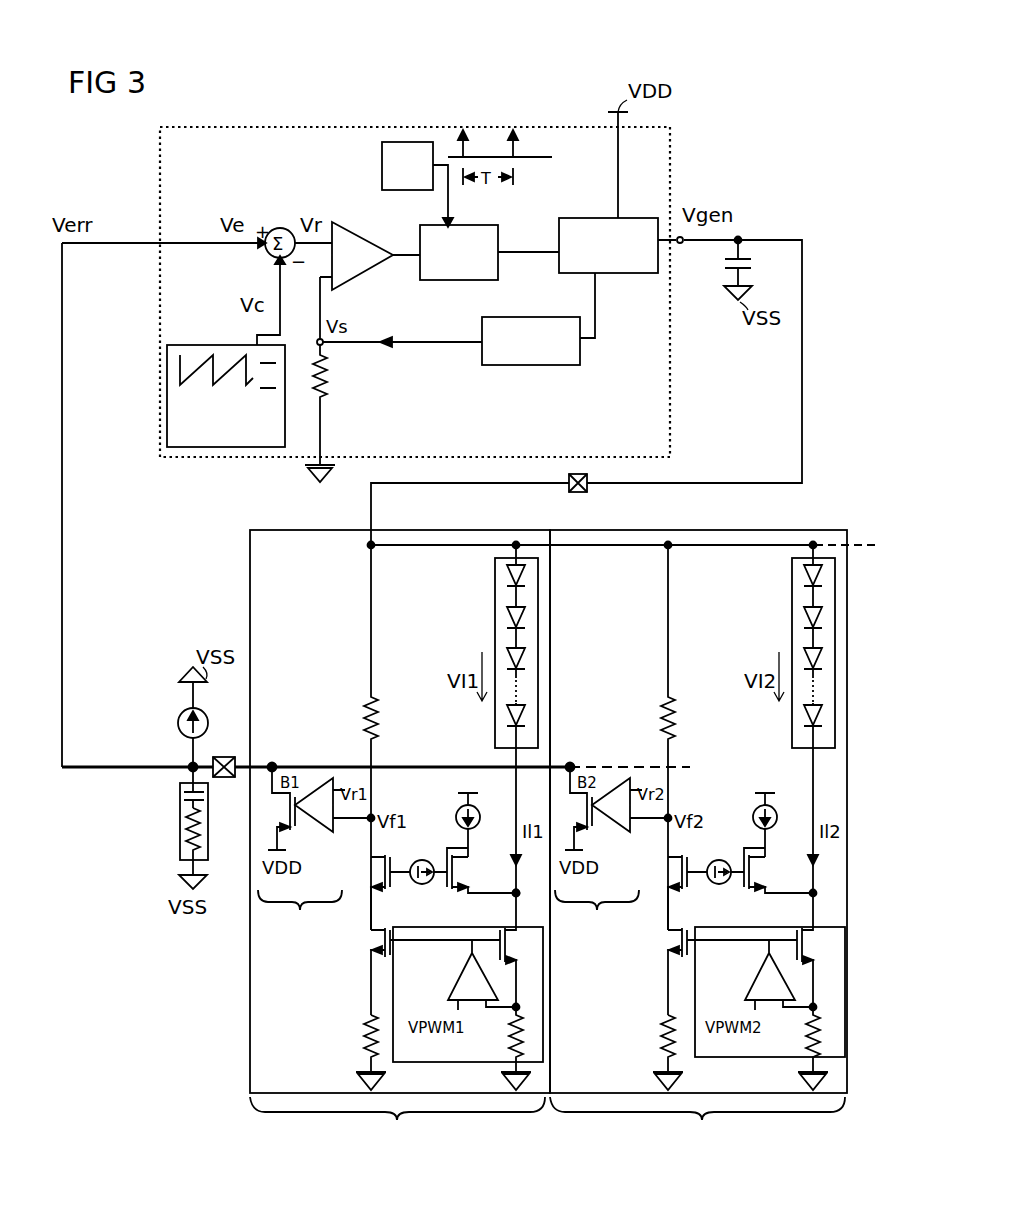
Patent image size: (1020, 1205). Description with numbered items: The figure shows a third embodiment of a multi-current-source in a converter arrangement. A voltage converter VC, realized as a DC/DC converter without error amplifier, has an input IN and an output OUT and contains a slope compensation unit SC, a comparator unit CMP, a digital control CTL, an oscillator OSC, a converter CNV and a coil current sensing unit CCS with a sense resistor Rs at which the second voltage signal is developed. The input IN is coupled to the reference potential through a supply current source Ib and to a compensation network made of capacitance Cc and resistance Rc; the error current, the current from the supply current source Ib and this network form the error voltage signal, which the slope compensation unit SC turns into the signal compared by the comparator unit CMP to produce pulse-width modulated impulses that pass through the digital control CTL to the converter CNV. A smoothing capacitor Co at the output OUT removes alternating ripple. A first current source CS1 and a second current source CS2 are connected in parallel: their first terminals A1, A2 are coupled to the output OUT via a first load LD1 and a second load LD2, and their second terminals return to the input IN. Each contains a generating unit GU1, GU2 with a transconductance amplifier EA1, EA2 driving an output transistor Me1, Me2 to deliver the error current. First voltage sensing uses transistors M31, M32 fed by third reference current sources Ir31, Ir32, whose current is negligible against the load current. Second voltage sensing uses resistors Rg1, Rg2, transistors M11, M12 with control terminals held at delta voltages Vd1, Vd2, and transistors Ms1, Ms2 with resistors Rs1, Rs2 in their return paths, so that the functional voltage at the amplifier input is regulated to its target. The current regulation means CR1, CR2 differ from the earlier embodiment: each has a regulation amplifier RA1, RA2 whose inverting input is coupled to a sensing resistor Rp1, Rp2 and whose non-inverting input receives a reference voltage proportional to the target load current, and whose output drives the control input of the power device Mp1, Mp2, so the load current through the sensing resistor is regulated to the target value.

The voltage converter VC is at (670, 150).
The comparator unit CMP is at (380, 236).
The oscillator OSC is at (382, 165).
The digital control CTL is at (478, 280).
The converter CNV is at (620, 274).
The coil current sensing unit CCS is at (587, 344).
The sense resistor Rs is at (337, 413).
The slope compensation unit SC is at (207, 344).
The smoothing capacitor Co is at (750, 270).
The output OUT is at (485, 509).
The input IN is at (223, 756).
The supply current source Ib is at (180, 717).
The capacitance Cc is at (207, 813).
The resistance Rc is at (206, 848).
The first current source CS1 is at (400, 840).
The second current source CS2 is at (698, 840).
The resistor Rg1 is at (393, 737).
The resistor Rg2 is at (690, 737).
The first load LD1 is at (495, 567).
The second load LD2 is at (792, 567).
The transconductance amplifier EA1 is at (313, 790).
The transconductance amplifier EA2 is at (610, 790).
The output transistor Me1 is at (273, 808).
The output transistor Me2 is at (570, 808).
The first generating unit GU1 is at (300, 915).
The second generating unit GU2 is at (597, 915).
The transistor M11 is at (366, 892).
The transistor M12 is at (663, 892).
The transistor M31 is at (475, 870).
The transistor M32 is at (772, 870).
The delta voltage Vd1 is at (417, 860).
The delta voltage Vd2 is at (717, 882).
The third reference current source Ir31 is at (451, 825).
The third reference current source Ir32 is at (748, 825).
The first terminal A1 is at (513, 898).
The first terminal A2 is at (812, 896).
The first current regulation means CR1 is at (405, 1062).
The second current regulation means CR2 is at (702, 1057).
The transistor Ms1 is at (414, 971).
The transistor Ms2 is at (711, 971).
The power device Mp1 is at (528, 950).
The power device Mp2 is at (825, 950).
The regulation amplifier RA1 is at (456, 981).
The regulation amplifier RA2 is at (753, 981).
The resistor Rs1 is at (354, 1052).
The resistor Rs2 is at (651, 1052).
The sensing resistor Rp1 is at (499, 1048).
The sensing resistor Rp2 is at (796, 1048).